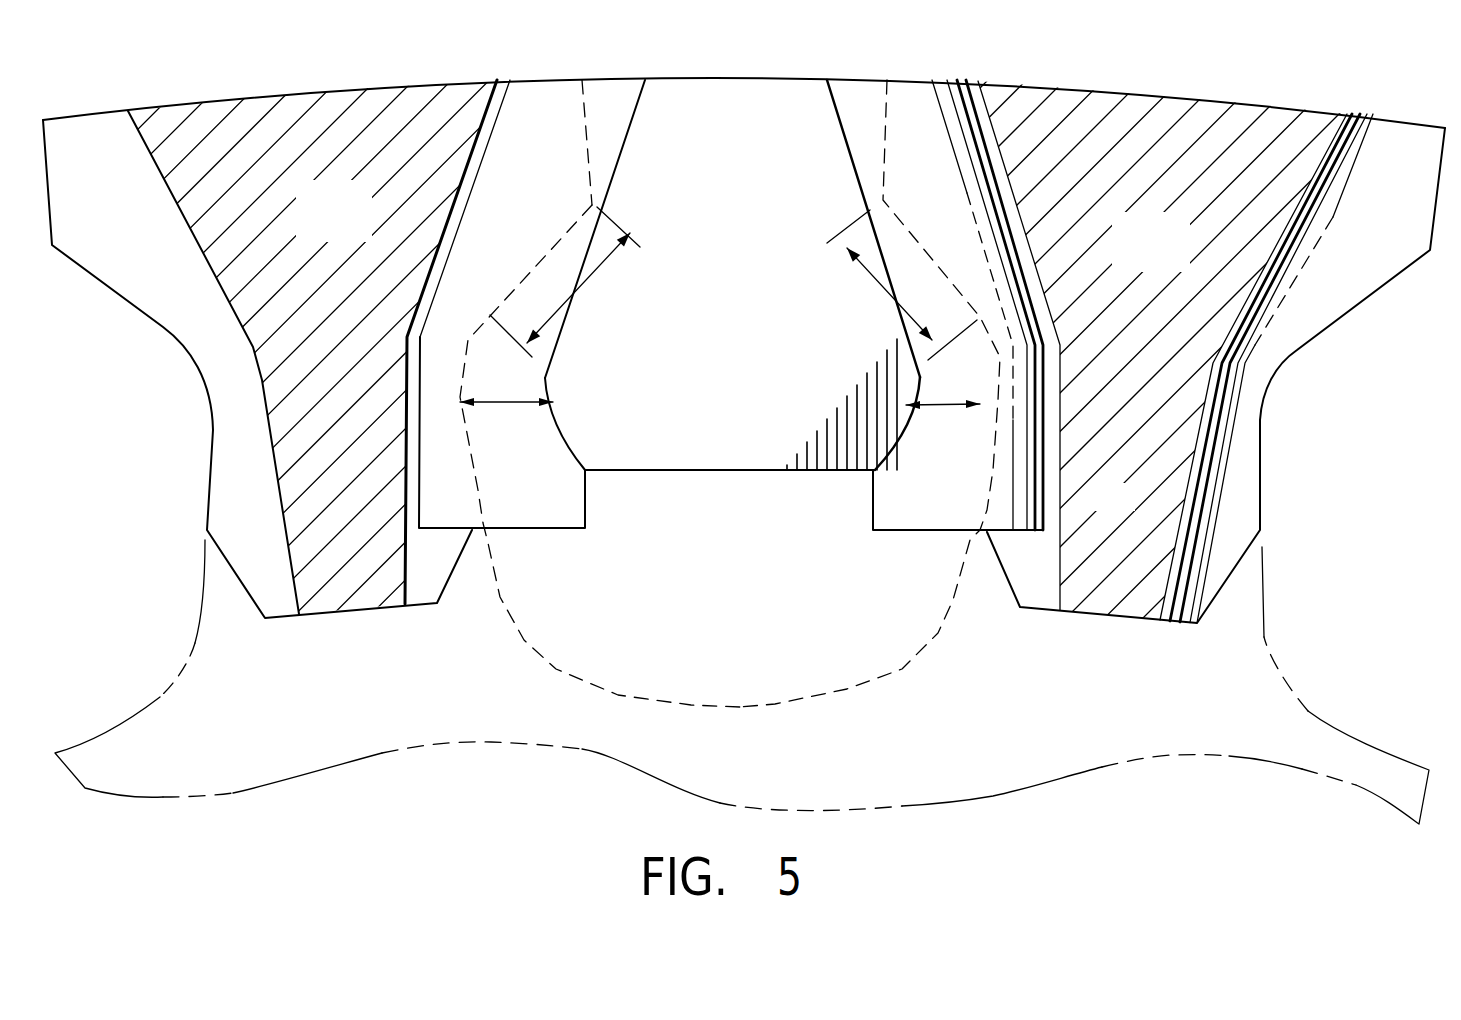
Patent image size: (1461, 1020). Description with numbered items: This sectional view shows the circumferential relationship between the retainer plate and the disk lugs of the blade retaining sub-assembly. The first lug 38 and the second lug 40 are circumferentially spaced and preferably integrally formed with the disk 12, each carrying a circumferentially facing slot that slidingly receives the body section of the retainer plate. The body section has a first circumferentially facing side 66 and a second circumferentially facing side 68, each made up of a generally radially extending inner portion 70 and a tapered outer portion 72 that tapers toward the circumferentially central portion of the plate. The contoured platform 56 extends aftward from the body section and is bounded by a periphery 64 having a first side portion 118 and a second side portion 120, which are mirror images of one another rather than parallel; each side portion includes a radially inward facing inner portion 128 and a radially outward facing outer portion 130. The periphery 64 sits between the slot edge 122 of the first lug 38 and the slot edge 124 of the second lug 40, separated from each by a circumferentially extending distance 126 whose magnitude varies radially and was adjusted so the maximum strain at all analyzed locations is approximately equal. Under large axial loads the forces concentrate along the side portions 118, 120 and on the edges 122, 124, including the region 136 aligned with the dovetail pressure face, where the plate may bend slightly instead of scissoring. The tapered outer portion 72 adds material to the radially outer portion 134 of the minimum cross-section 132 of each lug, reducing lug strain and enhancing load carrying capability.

The disk 12 is at (1272, 611).
The first lug 38 is at (1410, 150).
The second lug 40 is at (73, 138).
The contoured platform 56 is at (720, 287).
The periphery 64 is at (632, 115).
The first circumferentially facing side 66 is at (980, 113).
The second circumferentially facing side 68 is at (483, 107).
The inner portion 70 is at (410, 477).
The tapered outer portion 72 is at (460, 210).
The first side portion 118 is at (857, 113).
The second side portion 120 is at (591, 134).
The edge 122 is at (881, 143).
The edge 124 is at (590, 97).
The distance 126 is at (503, 407).
The inner portion 128 is at (580, 472).
The outer portion 130 is at (621, 150).
The minimum cross-section 132 is at (308, 229).
The radially outer portion 134 is at (343, 97).
The region 136 is at (587, 273).